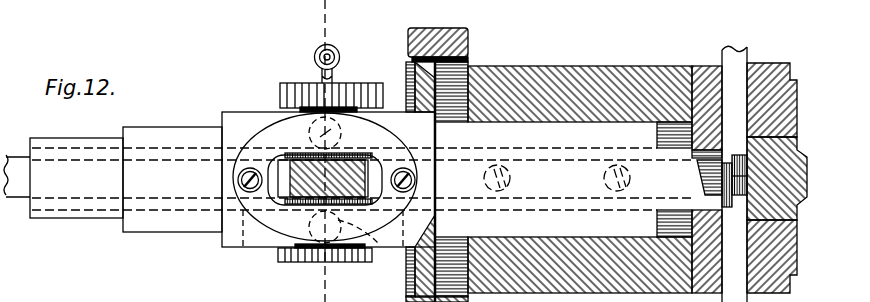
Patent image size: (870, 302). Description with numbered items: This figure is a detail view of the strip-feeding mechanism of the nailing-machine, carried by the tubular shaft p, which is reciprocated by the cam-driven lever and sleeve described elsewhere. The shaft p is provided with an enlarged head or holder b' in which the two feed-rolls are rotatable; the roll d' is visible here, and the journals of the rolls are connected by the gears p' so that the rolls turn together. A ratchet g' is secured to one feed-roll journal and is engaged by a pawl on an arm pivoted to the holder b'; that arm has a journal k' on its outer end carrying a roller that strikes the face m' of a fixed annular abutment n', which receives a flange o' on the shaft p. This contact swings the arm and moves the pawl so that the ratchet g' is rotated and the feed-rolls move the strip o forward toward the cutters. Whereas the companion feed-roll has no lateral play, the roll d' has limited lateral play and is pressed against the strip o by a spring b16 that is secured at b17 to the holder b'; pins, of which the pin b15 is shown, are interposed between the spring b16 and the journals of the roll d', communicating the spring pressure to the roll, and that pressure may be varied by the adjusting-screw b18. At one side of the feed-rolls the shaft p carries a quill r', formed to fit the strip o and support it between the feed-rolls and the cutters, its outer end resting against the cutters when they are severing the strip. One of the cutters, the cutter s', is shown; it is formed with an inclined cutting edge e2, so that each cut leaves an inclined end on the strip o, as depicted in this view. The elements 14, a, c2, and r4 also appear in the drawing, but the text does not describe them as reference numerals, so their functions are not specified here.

The center line 14 is at (325, 151).
The fixed annular abutment n' is at (417, 31).
The spring b16 is at (262, 135).
The holder b' is at (328, 162).
The tubular shaft p is at (361, 157).
The strip o is at (17, 192).
The adjusting-screw b18 is at (246, 187).
The feed-roll d' is at (303, 216).
The gear p' is at (302, 282).
The pin b15 is at (386, 100).
The journal k' is at (343, 256).
The quill r' is at (338, 231).
The ratchet g' is at (353, 69).
The flange o' is at (438, 101).
The securing point b17 is at (414, 183).
The face m' is at (437, 258).
The frame a is at (586, 82).
The cutter s' is at (721, 166).
The collar c2 is at (749, 172).
The inclined cutting edge e2 is at (722, 176).
The bushing r4 is at (674, 179).